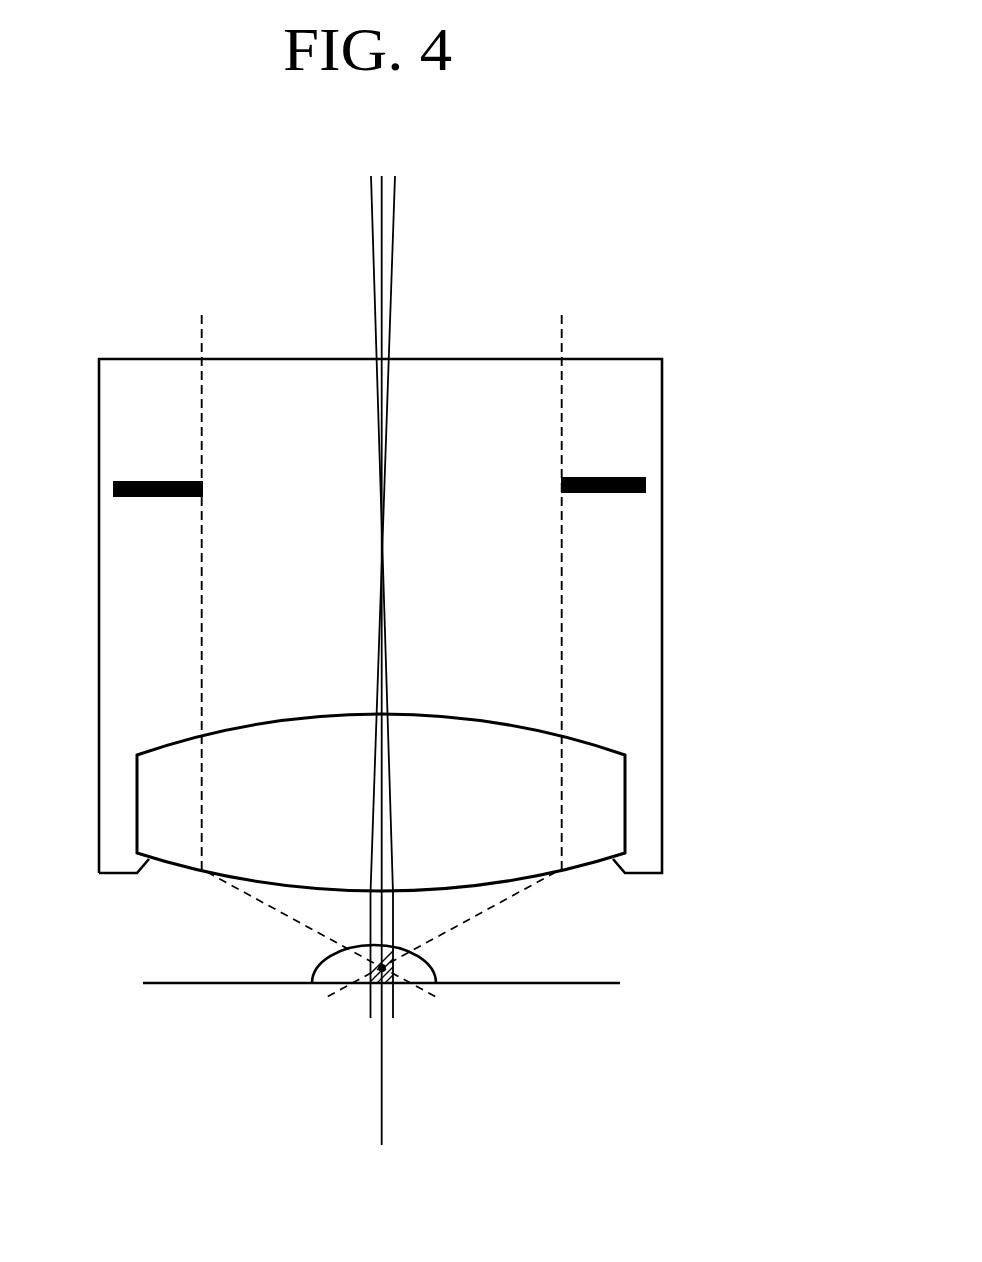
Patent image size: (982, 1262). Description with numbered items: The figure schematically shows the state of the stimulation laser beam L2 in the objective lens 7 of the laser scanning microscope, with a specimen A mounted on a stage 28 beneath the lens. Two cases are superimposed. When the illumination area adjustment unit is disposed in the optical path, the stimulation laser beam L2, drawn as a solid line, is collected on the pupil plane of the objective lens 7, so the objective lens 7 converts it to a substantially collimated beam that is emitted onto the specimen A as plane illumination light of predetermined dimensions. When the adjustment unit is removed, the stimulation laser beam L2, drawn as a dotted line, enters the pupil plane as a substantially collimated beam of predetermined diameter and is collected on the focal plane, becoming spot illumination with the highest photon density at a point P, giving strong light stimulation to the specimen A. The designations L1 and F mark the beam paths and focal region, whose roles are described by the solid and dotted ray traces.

The objective lens 7 is at (662, 698).
The stage 28 is at (600, 983).
The first laser beam L1 is at (530, 656).
The stimulation laser beam L2 is at (383, 613).
The focal line F is at (562, 555).
The specimen A is at (322, 968).
The point P is at (390, 968).